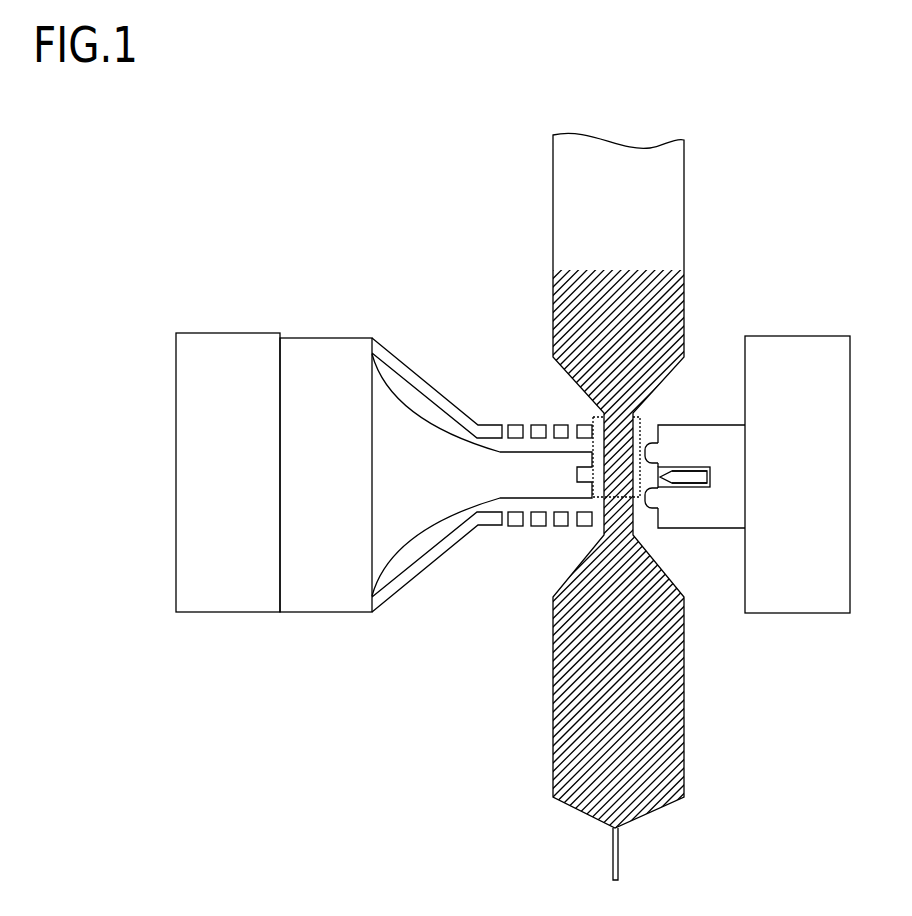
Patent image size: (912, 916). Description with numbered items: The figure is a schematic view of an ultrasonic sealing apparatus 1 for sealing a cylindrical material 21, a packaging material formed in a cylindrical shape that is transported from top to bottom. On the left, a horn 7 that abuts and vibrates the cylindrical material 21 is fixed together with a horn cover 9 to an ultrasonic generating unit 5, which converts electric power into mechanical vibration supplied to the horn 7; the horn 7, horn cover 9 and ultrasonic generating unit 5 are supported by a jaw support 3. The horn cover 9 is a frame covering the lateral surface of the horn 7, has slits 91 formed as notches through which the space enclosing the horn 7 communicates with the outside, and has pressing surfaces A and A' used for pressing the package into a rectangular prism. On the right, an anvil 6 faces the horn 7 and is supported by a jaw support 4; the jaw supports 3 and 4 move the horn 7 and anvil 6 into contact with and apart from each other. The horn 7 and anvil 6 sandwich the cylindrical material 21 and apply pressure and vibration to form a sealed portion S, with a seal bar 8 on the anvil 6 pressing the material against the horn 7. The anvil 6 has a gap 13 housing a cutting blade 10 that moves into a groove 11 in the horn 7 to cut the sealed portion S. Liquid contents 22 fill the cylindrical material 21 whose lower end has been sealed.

The ultrasonic sealing apparatus 1 is at (466, 224).
The jaw support 3 is at (252, 355).
The jaw support 4 is at (796, 387).
The ultrasonic generating unit 5 is at (346, 355).
The anvil 6 is at (734, 530).
The horn 7 is at (447, 507).
The seal bar 8 is at (645, 508).
The horn cover 9 is at (433, 387).
The cutting blade 10 is at (698, 488).
The groove 11 is at (577, 474).
The gap 13 is at (700, 465).
The cylindrical material 21 is at (680, 212).
The liquid contents 22 is at (668, 293).
The slit 91 is at (502, 520).
The pressing surface A is at (550, 383).
The pressing surface A' is at (556, 571).
The sealed portion S is at (640, 418).